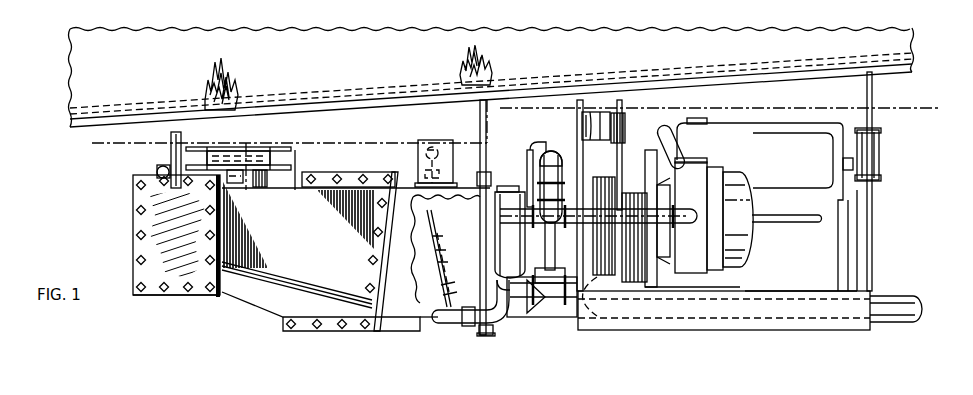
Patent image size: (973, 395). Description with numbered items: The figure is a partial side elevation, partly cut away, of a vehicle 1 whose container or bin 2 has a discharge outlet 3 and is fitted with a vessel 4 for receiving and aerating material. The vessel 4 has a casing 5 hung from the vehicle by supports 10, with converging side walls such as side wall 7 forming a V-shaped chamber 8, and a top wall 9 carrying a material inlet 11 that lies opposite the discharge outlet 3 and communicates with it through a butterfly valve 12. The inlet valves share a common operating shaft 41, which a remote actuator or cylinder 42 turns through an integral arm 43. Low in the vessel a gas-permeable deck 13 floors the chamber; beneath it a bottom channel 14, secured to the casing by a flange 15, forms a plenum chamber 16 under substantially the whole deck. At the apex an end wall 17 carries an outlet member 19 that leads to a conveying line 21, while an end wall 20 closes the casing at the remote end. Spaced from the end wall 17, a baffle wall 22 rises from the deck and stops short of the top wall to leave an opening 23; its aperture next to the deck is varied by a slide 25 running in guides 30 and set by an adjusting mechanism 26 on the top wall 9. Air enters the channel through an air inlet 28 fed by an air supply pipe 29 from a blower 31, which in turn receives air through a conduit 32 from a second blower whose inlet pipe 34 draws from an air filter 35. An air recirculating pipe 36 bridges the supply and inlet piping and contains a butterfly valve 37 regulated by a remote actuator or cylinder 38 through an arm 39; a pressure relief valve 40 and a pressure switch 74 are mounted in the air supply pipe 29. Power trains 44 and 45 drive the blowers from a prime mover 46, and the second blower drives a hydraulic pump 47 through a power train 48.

The vehicle 1 is at (912, 46).
The container or bin 2 is at (797, 24).
The discharge outlet 3 is at (92, 143).
The vessel 4 is at (205, 302).
The casing 5 is at (297, 268).
The side wall 7 is at (280, 265).
The V-shaped chamber 8 is at (445, 249).
The top wall 9 is at (300, 186).
The supports 10 is at (169, 146).
The material inlet 11 is at (238, 183).
The butterfly valve 12 is at (215, 148).
The gas-permeable deck 13 is at (403, 308).
The bottom channel 14 is at (330, 305).
The flange 15 is at (306, 300).
The plenum chamber 16 is at (381, 322).
The end wall 17 is at (490, 337).
The outlet member 19 is at (509, 318).
The end wall 20 is at (143, 247).
The conveying line 21 is at (557, 318).
The baffle wall 22 is at (412, 200).
The opening 23 is at (423, 206).
The slide 25 is at (447, 293).
The adjusting mechanism 26 is at (445, 140).
The air inlet 28 is at (429, 316).
The air supply pipe 29 is at (473, 324).
The guides 30 is at (437, 213).
The blower 31 is at (692, 276).
The conduit 32 is at (663, 166).
The inlet pipe 34 is at (648, 326).
The air filter 35 is at (506, 198).
The air recirculating pipe 36 is at (560, 174).
The butterfly valve 37 is at (551, 156).
The remote actuator or cylinder 38 is at (512, 186).
The arm 39 is at (530, 152).
The pressure relief valve 40 is at (483, 173).
The common operating shaft 41 is at (253, 153).
The remote actuator or cylinder 42 is at (160, 168).
The integral arm 43 is at (228, 160).
The power train 44 is at (628, 287).
The power train 45 is at (603, 280).
The prime mover 46 is at (777, 123).
The hydraulic pump 47 is at (603, 112).
The power train 48 is at (627, 112).
The pressure switch 74 is at (457, 326).